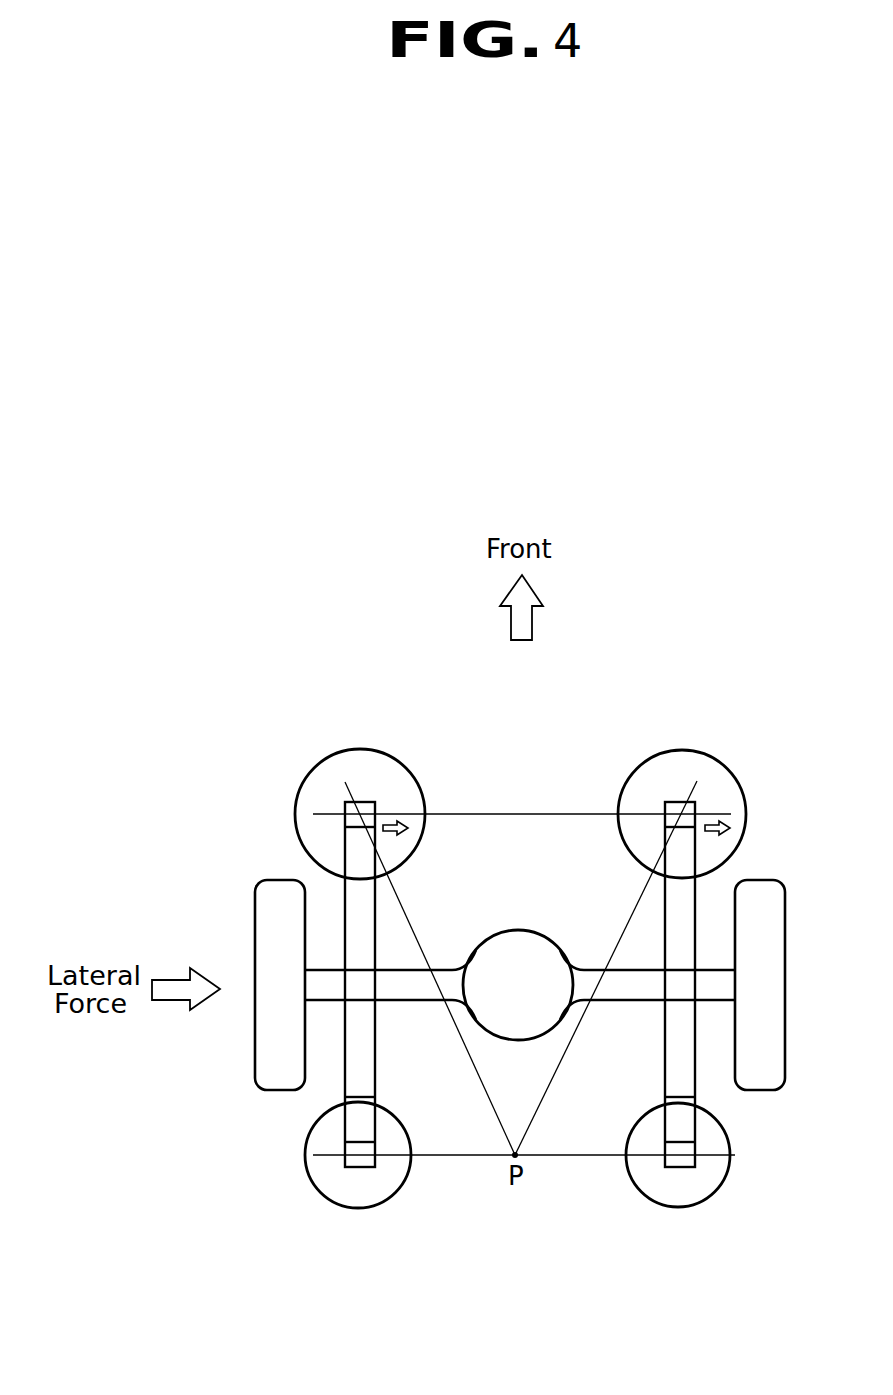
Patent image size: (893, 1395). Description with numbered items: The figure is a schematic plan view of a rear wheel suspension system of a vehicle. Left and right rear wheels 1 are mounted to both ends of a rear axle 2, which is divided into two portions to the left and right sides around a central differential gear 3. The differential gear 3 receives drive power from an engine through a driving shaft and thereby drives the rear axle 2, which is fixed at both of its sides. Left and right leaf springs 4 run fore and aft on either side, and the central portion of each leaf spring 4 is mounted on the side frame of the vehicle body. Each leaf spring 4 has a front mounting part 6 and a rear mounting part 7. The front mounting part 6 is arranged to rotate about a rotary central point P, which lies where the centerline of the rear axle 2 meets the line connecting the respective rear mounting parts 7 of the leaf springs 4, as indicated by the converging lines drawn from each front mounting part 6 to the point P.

The rear wheel 1 is at (270, 1072).
The rear axle 2 is at (415, 985).
The differential gear 3 is at (518, 953).
The leaf spring 4 is at (374, 918).
The front mounting part 6 is at (315, 767).
The rear mounting part 7 is at (302, 1187).